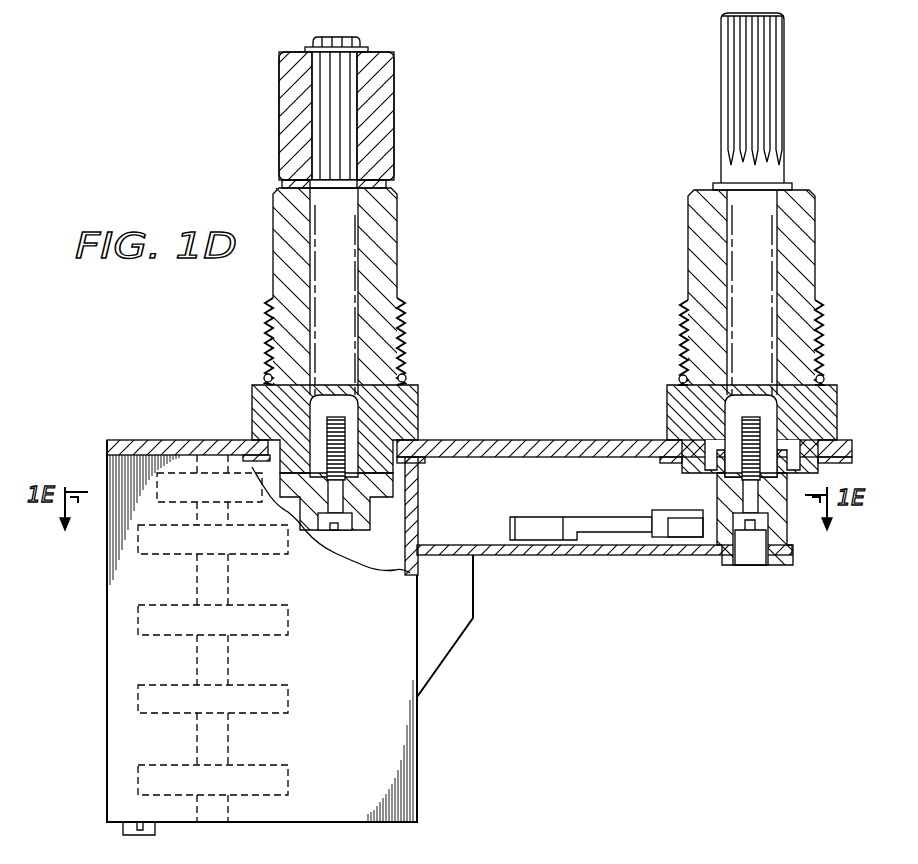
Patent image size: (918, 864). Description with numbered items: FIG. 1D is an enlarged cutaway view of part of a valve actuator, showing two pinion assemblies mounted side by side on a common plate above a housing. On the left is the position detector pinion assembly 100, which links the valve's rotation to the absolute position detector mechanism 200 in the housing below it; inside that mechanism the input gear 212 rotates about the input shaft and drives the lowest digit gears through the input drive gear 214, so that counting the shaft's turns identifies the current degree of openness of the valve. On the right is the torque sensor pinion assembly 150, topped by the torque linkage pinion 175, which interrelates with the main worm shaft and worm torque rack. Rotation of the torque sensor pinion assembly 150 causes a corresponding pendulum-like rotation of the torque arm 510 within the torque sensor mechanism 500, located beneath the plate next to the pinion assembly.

The gear limit position detector assembly 100 is at (398, 253).
The torque sensor pinion assembly 150 is at (815, 268).
The torque linkage pinion 175 is at (785, 100).
The absolute position detector mechanism 200 is at (98, 632).
The input gear 212 is at (382, 503).
The input drive gear 214 is at (187, 472).
The torque sensor mechanism 500 is at (758, 570).
The torque arm 510 is at (597, 525).